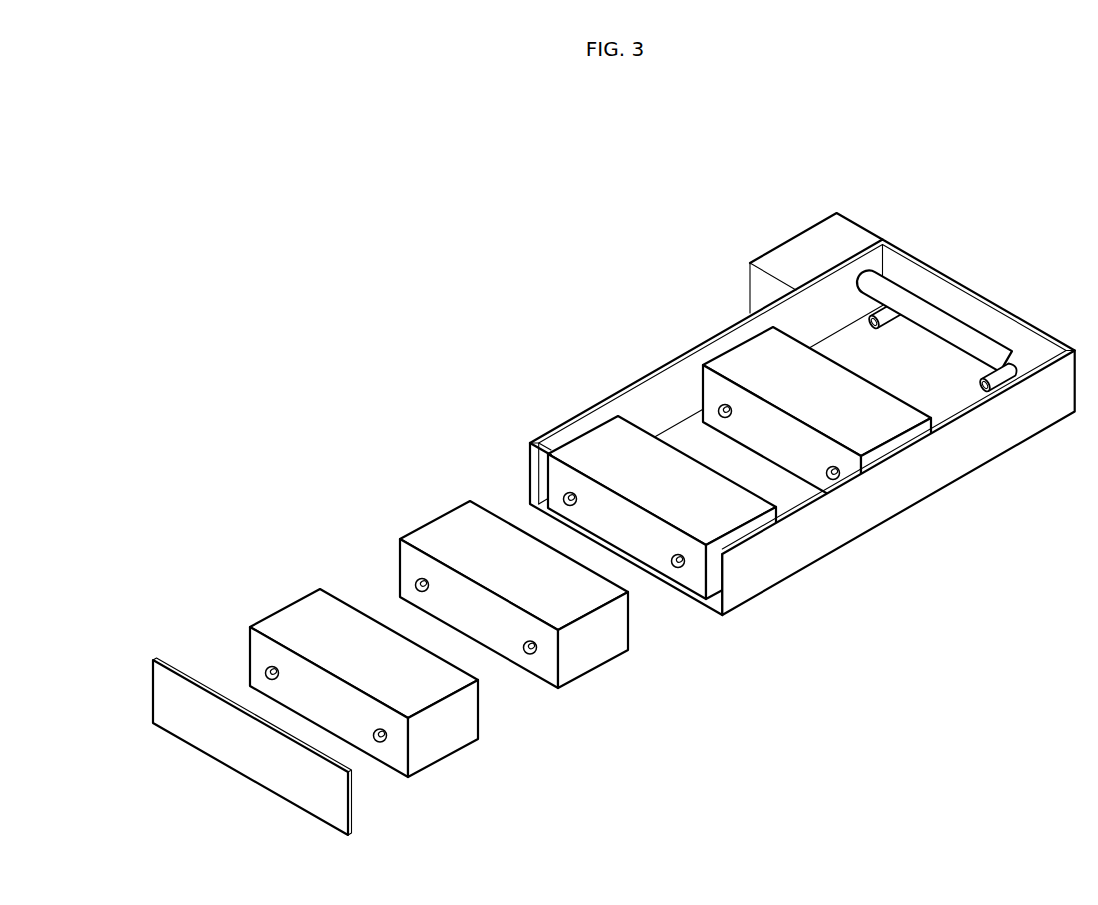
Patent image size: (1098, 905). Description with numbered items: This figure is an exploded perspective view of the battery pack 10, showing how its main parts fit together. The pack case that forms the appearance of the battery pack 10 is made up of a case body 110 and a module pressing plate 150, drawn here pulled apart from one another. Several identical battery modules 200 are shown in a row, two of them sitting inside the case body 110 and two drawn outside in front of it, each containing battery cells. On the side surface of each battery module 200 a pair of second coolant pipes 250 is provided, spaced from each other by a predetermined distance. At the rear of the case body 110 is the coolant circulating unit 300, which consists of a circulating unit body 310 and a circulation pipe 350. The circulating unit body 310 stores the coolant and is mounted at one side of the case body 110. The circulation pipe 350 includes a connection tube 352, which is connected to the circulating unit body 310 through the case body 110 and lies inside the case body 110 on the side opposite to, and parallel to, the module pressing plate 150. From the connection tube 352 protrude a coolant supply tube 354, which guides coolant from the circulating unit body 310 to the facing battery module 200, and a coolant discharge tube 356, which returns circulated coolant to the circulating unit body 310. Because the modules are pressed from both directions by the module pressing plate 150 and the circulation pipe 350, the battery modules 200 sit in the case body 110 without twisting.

The battery pack 10 is at (436, 311).
The case body 110 is at (860, 523).
The module pressing plate 150 is at (310, 802).
The battery module 200 is at (297, 618).
The second coolant pipes 250 is at (415, 585).
The coolant circulating unit 300 is at (846, 187).
The circulating unit body 310 is at (781, 256).
The circulation pipe 350 is at (1005, 332).
The connection tube 352 is at (962, 325).
The coolant supply tube 354 is at (1010, 372).
The coolant discharge tube 356 is at (903, 305).